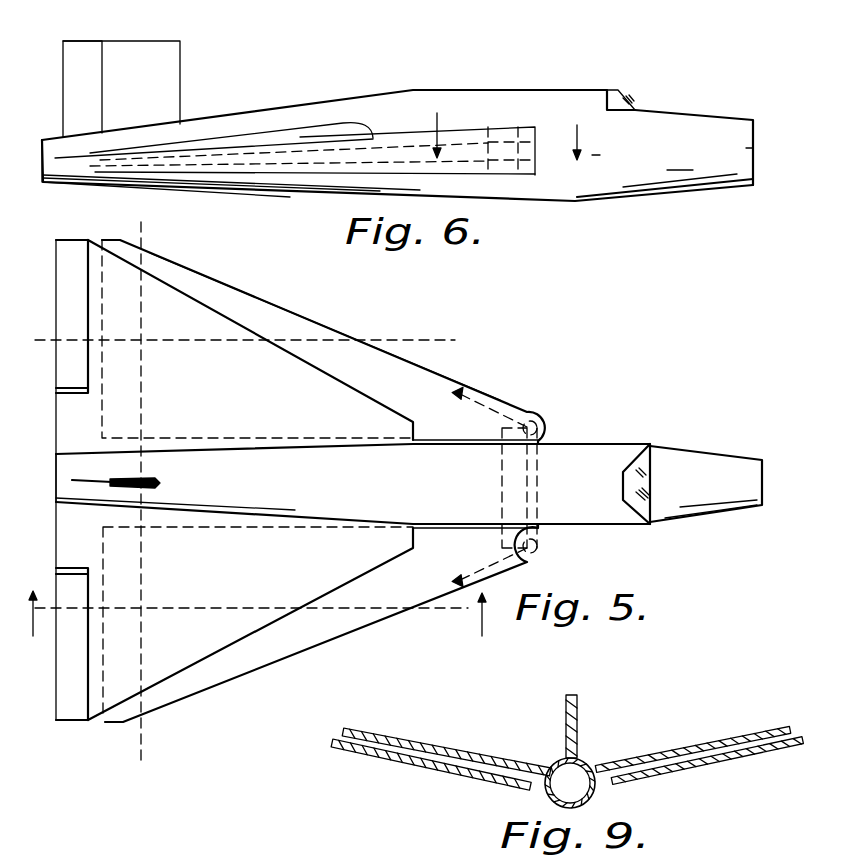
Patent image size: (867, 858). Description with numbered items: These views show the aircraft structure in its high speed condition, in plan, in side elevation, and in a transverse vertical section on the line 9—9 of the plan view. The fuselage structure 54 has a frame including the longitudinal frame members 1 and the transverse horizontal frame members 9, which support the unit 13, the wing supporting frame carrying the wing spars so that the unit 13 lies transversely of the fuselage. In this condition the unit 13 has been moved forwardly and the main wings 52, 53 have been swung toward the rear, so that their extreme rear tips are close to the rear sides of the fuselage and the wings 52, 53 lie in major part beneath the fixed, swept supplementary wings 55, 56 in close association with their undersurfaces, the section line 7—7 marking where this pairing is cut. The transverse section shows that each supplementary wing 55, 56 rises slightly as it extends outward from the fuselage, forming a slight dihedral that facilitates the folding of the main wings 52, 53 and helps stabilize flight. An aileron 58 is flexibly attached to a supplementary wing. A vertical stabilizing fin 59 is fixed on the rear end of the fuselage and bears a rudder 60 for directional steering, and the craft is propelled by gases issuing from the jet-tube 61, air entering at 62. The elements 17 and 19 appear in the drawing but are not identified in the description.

In FIG. 6, the longitudinal frame members 1 is at (576, 132).
In FIG. 5, the longitudinal frame members 1 is at (440, 567).
In FIG. 5, the section line 7— 7 is at (40, 340).
In FIG. 5, the horizontal frame members 9 is at (142, 233).
In FIG. 6, the unit 13 is at (312, 158).
In FIG. 5, the unit 13 is at (535, 475).
In FIG. 5, the pivot at wing tip 17 is at (538, 430).
In FIG. 6, the strut end fitting 19 is at (513, 178).
In FIG. 5, the main wing 52 is at (232, 292).
In FIG. 9, the main wing 52 is at (403, 760).
In FIG. 6, the main wing 53 is at (324, 175).
In FIG. 5, the main wing 53 is at (270, 529).
In FIG. 9, the main wing 53 is at (705, 762).
In FIG. 6, the fuselage structure 54 is at (283, 107).
In FIG. 5, the fuselage structure 54 is at (613, 444).
In FIG. 9, the fuselage structure 54 is at (577, 757).
In FIG. 5, the supplementary wing 55 is at (321, 370).
In FIG. 9, the supplementary wing 55 is at (443, 748).
In FIG. 6, the supplementary wing 56 is at (346, 124).
In FIG. 5, the supplementary wing 56 is at (224, 650).
In FIG. 9, the supplementary wing 56 is at (680, 746).
In FIG. 6, the aileron 58 is at (75, 163).
In FIG. 5, the aileron 58 is at (64, 673).
In FIG. 6, the vertical stabilizing fin 59 is at (181, 75).
In FIG. 5, the vertical stabilizing fin 59 is at (64, 358).
In FIG. 6, the rudder 60 is at (77, 47).
In FIG. 5, the rudder 60 is at (102, 476).
In FIG. 6, the jet-tube 61 is at (42, 184).
In FIG. 5, the jet-tube 61 is at (56, 504).
In FIG. 9, the jet-tube 61 is at (567, 784).
In FIG. 6, the air inlet 62 is at (753, 176).
In FIG. 5, the air inlet 62 is at (762, 500).